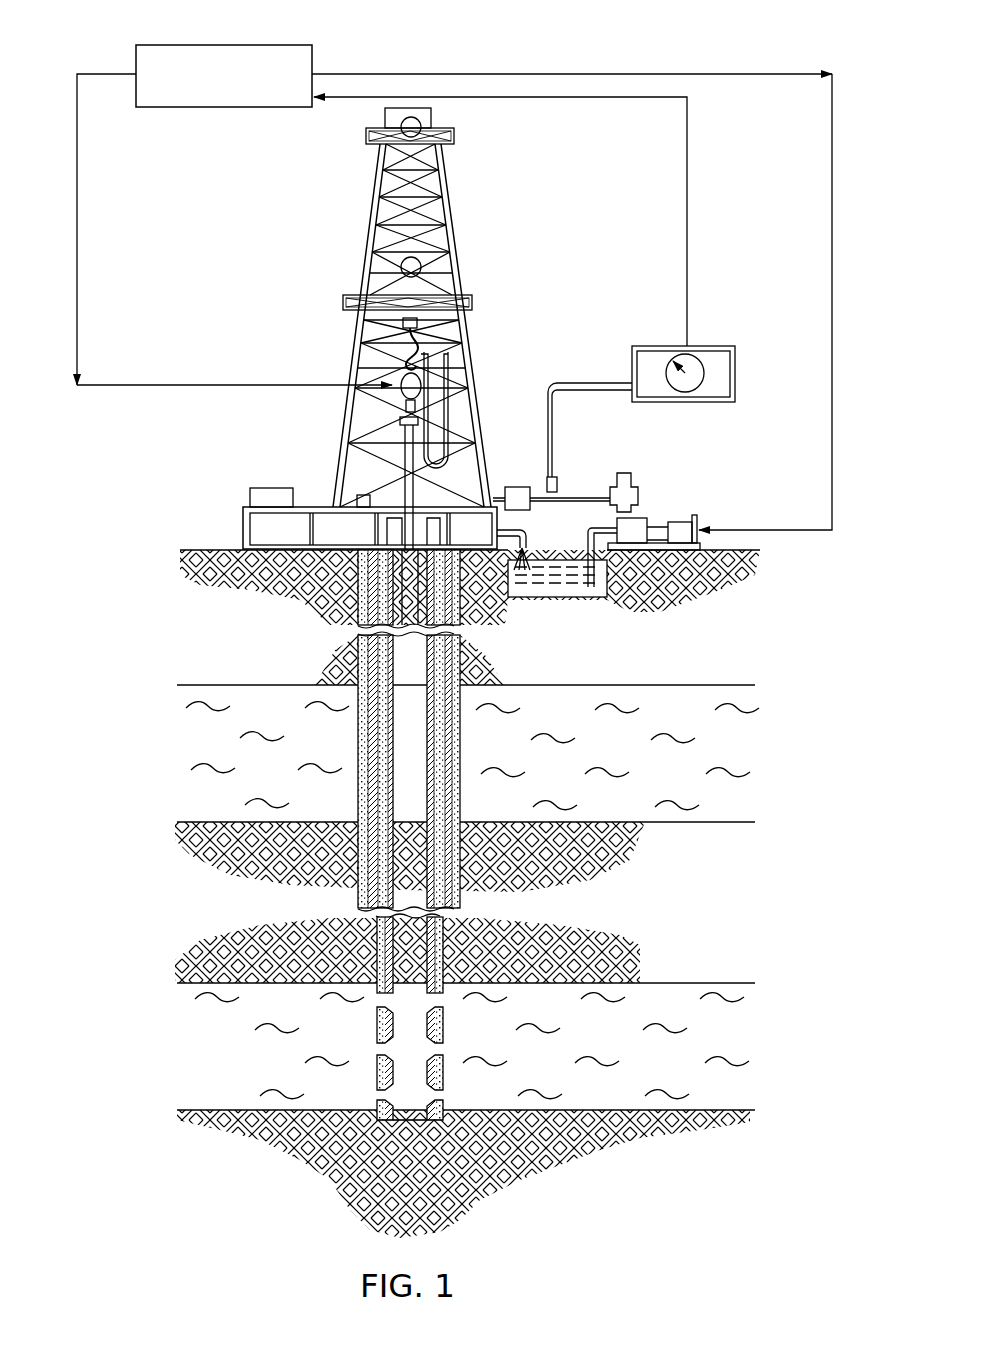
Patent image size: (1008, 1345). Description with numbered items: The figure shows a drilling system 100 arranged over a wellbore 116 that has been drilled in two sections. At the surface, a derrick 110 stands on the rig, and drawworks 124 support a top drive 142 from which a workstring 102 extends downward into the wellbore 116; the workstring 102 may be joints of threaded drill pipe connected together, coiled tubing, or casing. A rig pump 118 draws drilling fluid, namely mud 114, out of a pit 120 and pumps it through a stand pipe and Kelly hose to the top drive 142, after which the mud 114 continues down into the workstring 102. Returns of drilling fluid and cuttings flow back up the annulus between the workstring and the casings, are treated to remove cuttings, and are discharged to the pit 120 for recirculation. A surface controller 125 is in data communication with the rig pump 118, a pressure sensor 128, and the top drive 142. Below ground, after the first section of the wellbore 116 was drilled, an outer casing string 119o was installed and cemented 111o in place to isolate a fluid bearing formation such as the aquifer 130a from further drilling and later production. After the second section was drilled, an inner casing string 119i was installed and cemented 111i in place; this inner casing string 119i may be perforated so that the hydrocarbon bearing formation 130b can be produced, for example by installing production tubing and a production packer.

The drilling system 100 is at (752, 44).
The workstring 102 is at (403, 473).
The derrick 110 is at (373, 207).
The cement (outer casing) 111o is at (460, 618).
The cement (inner casing) 111i is at (377, 930).
The mud 114 is at (562, 562).
The wellbore 116 is at (457, 1110).
The rig pump 118 is at (662, 495).
The inner casing string 119i is at (398, 605).
The outer casing string 119o is at (452, 920).
The pit 120 is at (605, 600).
The drawworks 124 is at (293, 490).
The surface controller 125 is at (245, 108).
The pressure sensor 128 is at (700, 346).
The aquifer 130a is at (840, 759).
The hydrocarbon bearing formation 130b is at (834, 1054).
The top drive 142 is at (398, 362).